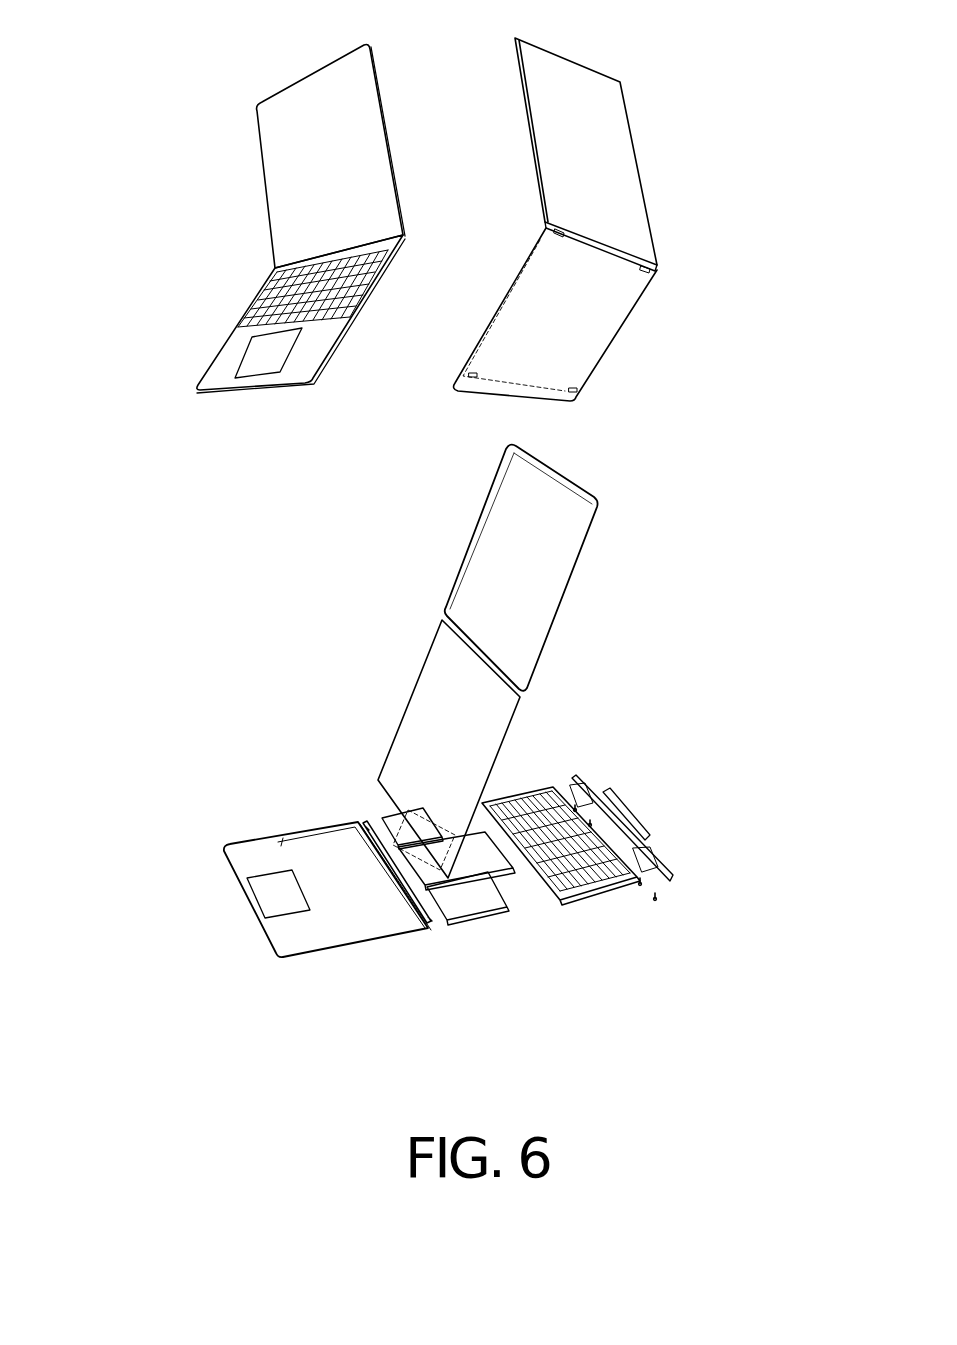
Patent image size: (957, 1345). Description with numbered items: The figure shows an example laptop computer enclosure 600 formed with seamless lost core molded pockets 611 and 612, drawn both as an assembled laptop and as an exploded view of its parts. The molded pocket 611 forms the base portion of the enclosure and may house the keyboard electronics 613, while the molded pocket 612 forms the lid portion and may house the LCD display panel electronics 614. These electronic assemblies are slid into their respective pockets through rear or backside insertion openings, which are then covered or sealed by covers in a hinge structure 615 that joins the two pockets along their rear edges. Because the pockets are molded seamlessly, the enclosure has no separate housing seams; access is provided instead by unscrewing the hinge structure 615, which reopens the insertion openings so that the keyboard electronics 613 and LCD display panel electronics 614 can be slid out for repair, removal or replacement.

The laptop computer enclosure 600 is at (846, 29).
The molded pocket 611 is at (318, 1026).
The molded pocket 612 is at (650, 566).
The keyboard electronics 613 is at (497, 912).
The LCD display panel electronics 614 is at (425, 692).
The hinge structure 615 is at (662, 856).